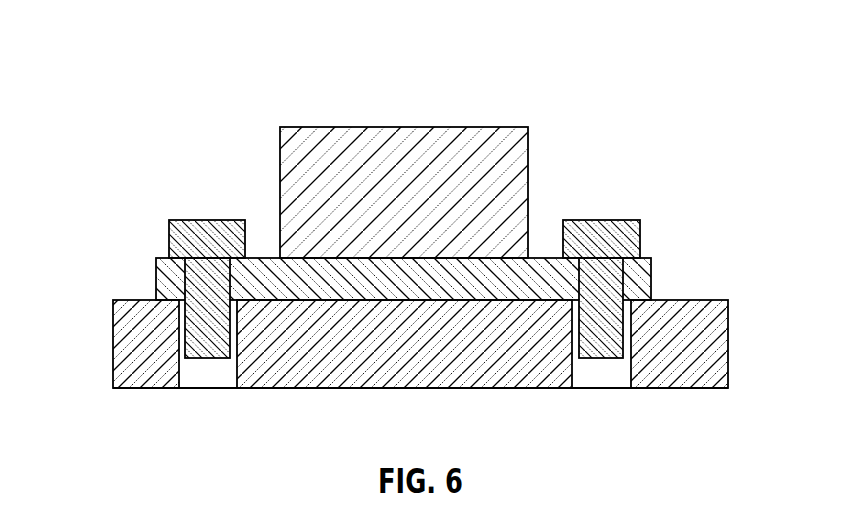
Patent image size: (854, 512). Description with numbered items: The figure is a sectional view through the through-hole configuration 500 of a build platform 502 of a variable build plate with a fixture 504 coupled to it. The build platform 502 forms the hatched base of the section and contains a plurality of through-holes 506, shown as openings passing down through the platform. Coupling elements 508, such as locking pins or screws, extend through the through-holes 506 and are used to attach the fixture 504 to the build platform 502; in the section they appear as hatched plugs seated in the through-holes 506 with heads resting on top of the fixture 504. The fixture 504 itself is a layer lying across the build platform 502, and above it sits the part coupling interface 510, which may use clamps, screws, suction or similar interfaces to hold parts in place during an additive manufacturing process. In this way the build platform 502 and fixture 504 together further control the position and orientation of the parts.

The through-hole configuration 500 is at (134, 36).
The build platform 502 is at (113, 352).
The fixture 504 is at (156, 285).
The through-holes 506 is at (241, 366).
The coupling elements 508 is at (167, 233).
The part coupling interface 510 is at (279, 158).